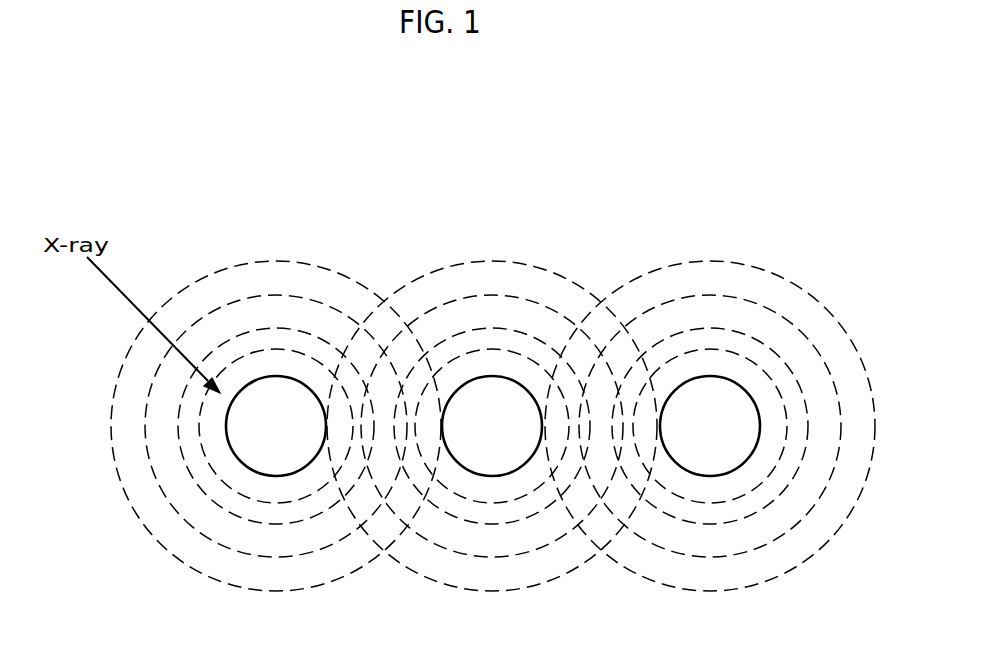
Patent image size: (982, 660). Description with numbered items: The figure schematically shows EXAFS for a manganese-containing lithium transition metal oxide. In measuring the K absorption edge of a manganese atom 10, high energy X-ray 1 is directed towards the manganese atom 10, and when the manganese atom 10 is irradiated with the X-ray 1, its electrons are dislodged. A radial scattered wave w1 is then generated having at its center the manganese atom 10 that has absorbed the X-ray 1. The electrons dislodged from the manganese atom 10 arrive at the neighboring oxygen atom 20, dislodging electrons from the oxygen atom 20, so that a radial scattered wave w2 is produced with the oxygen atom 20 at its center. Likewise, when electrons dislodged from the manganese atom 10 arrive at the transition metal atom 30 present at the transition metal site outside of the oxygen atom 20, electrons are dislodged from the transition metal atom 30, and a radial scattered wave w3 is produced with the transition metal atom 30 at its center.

The high energy X-ray 1 is at (120, 290).
The manganese atom 10 is at (276, 476).
The oxygen atom 20 is at (490, 476).
The transition metal atom 30 is at (710, 476).
The radial scattered wave w1 is at (277, 260).
The radial scattered wave w2 is at (493, 260).
The radial scattered wave w3 is at (707, 260).